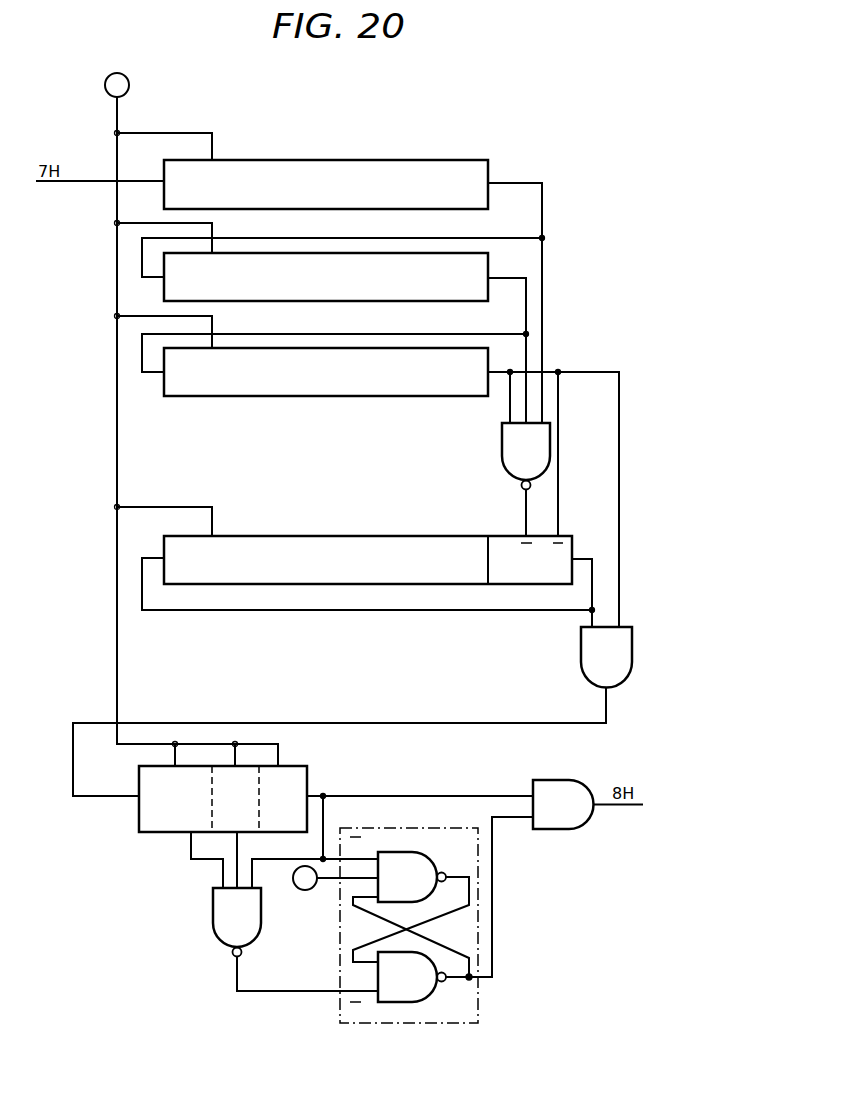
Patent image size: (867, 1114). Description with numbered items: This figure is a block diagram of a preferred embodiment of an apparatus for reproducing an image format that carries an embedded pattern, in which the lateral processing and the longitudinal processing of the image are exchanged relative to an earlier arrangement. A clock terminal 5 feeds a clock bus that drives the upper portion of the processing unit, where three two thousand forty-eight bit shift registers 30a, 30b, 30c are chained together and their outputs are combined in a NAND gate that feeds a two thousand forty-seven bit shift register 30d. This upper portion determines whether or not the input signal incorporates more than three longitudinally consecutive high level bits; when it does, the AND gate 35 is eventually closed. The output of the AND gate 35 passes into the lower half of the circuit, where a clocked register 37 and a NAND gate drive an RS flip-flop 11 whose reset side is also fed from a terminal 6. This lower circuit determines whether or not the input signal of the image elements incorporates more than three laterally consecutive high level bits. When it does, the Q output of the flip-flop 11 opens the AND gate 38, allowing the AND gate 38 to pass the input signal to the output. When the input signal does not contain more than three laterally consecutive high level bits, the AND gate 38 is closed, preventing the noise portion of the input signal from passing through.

The clock input terminal 5 is at (117, 73).
The reset input terminal 6 is at (305, 890).
The RS flip-flop 11 is at (423, 828).
The 2048-bit shift register 30a is at (406, 160).
The 2048-bit shift register 30b is at (488, 263).
The 2048-bit shift register 30c is at (488, 355).
The 2047-bit shift register 30d is at (305, 536).
The AND gate 35 is at (632, 657).
The shift register / counter 37 is at (293, 766).
The AND gate 38 is at (553, 780).